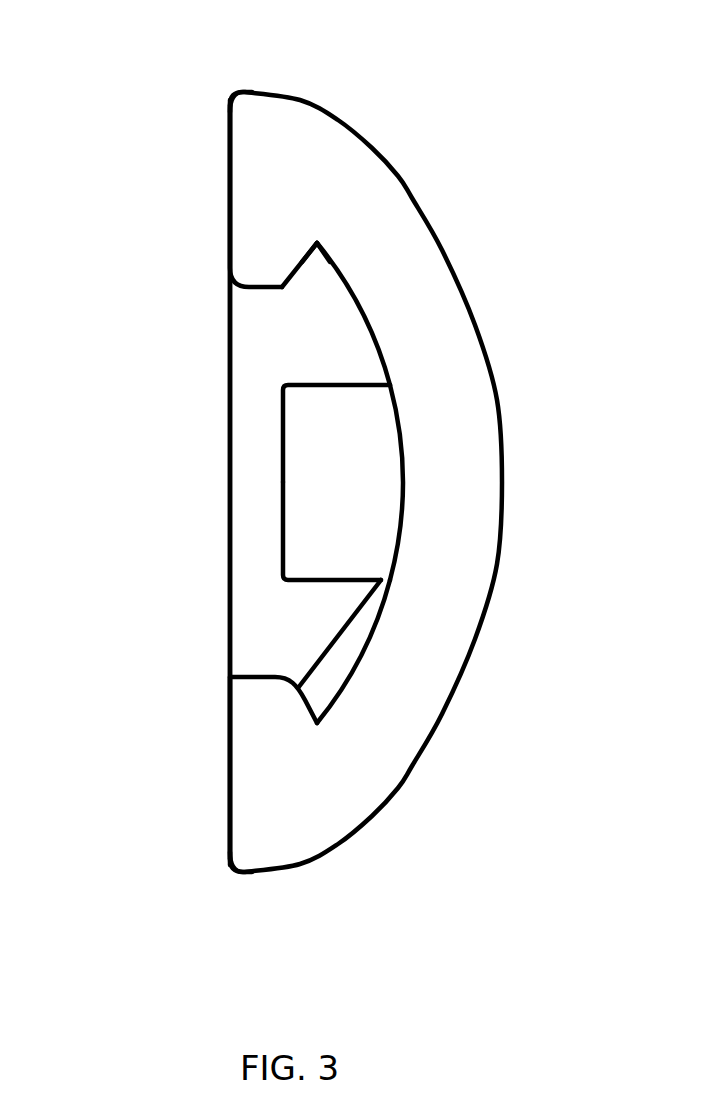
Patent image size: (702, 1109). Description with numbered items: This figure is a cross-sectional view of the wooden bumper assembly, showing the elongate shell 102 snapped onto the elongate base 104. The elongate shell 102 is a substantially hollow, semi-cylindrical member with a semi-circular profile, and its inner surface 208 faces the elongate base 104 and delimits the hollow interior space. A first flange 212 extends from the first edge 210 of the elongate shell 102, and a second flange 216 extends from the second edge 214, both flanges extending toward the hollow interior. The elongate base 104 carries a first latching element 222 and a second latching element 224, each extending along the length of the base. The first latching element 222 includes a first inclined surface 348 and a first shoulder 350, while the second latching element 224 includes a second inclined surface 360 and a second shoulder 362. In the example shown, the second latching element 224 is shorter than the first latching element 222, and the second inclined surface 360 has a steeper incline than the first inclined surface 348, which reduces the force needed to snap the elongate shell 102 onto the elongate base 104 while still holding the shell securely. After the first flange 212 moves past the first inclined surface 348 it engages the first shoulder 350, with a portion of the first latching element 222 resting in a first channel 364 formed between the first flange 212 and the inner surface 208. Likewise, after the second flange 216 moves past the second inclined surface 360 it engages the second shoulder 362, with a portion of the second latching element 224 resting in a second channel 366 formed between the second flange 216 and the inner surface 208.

The elongate shell 102 is at (468, 550).
The elongate base 104 is at (246, 513).
The inner surface 208 is at (408, 483).
The first edge 210 is at (233, 96).
The first flange 212 is at (257, 218).
The second edge 214 is at (240, 873).
The second flange 216 is at (257, 763).
The first latching element 222 is at (305, 343).
The second latching element 224 is at (262, 636).
The first inclined surface 348 is at (373, 325).
The first shoulder 350 is at (297, 268).
The second inclined surface 360 is at (353, 633).
The second shoulder 362 is at (287, 693).
The first channel 364 is at (330, 250).
The second channel 366 is at (328, 713).